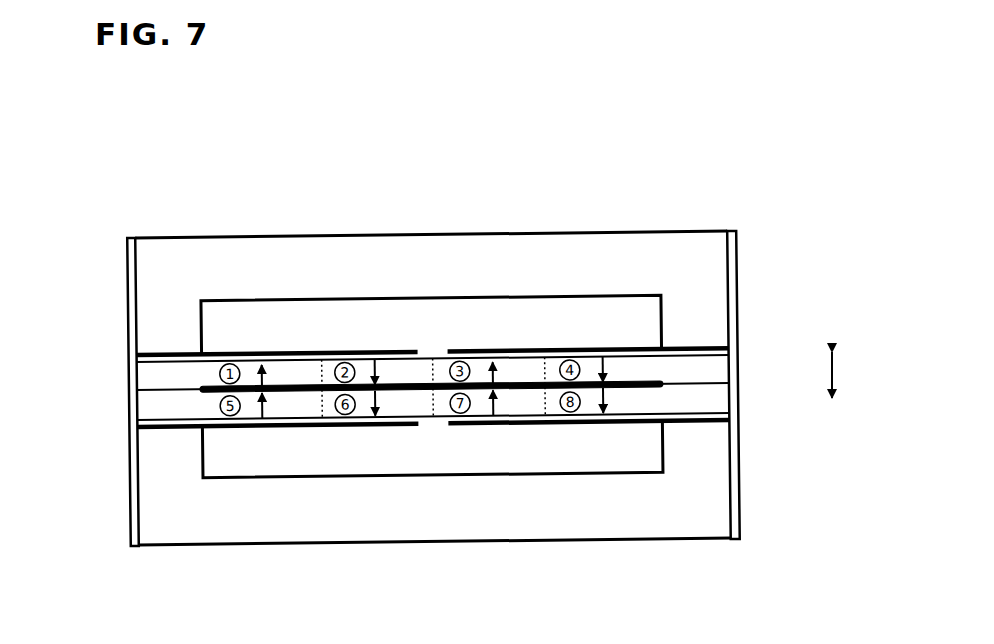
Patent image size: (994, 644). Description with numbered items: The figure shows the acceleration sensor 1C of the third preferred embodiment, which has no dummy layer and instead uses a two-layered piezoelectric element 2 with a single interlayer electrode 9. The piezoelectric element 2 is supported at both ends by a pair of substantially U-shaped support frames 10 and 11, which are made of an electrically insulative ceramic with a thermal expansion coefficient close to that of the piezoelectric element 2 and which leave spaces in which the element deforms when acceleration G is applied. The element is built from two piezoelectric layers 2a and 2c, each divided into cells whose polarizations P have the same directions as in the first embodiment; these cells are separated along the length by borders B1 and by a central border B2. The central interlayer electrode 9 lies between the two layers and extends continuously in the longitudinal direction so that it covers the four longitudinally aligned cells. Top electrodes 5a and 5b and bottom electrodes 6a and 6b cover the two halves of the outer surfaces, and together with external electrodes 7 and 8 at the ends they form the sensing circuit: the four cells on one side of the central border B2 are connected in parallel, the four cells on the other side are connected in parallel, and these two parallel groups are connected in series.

The acceleration sensor 1C is at (653, 193).
The piezoelectric element 2 is at (52, 353).
The piezoelectric layer 2a is at (142, 375).
The piezoelectric layer 2c is at (143, 408).
The top electrode 5a is at (316, 350).
The top electrode 5b is at (579, 348).
The bottom electrode 6a is at (253, 430).
The bottom electrode 6b is at (577, 423).
The external electrode 7 is at (128, 270).
The external electrode 8 is at (738, 272).
The interlayer electrode 9 is at (400, 382).
The support frame 10 is at (439, 250).
The support frame 11 is at (456, 525).
The polarization P is at (267, 375).
The border B1 is at (322, 402).
The central border B2 is at (433, 402).
The acceleration G is at (849, 375).